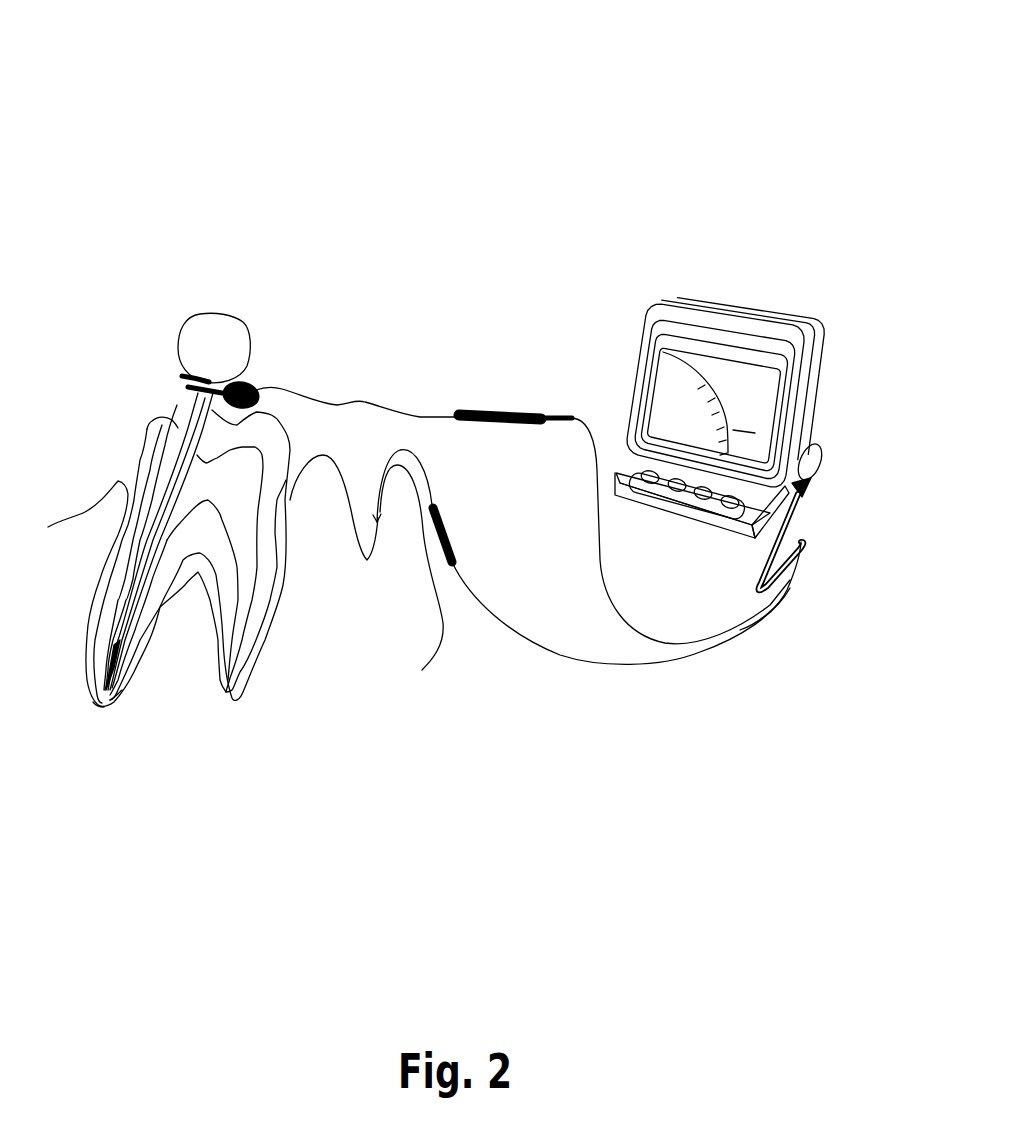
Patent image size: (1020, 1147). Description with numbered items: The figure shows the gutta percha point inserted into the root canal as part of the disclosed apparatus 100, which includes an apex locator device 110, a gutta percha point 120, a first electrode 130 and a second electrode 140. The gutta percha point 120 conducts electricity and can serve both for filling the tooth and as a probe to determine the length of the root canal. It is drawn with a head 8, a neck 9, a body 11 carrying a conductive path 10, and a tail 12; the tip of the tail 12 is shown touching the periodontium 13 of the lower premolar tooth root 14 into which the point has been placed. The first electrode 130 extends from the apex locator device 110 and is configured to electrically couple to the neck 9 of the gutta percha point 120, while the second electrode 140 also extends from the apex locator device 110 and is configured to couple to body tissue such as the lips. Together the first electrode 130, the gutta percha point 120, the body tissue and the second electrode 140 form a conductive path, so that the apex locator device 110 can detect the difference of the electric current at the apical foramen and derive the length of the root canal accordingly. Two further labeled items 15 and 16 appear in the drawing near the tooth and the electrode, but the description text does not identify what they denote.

The apparatus 100 is at (583, 152).
The apex locator device 110 is at (650, 311).
The gutta percha point 120 is at (238, 322).
The first electrode 130 is at (341, 400).
The second electrode 140 is at (583, 660).
The head 8 is at (202, 319).
The neck 9 is at (177, 372).
The conductive path 10 is at (184, 401).
The body 11 is at (167, 445).
The tail 12 is at (96, 670).
The periodontium 13 is at (99, 708).
The lower premolar tooth root 14 is at (128, 706).
The dentin 15 is at (247, 478).
The lip clip 16 is at (408, 519).